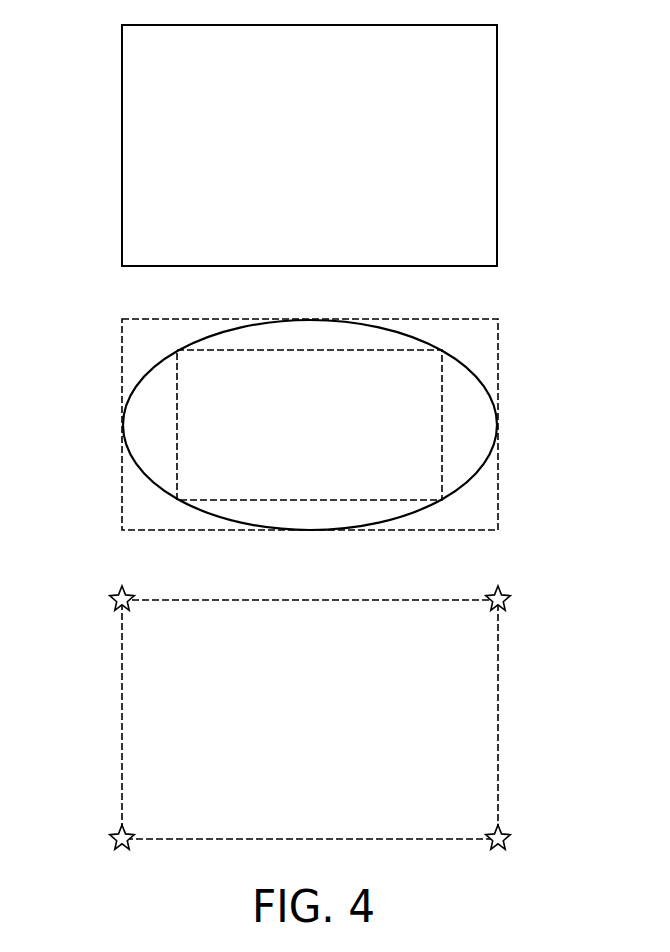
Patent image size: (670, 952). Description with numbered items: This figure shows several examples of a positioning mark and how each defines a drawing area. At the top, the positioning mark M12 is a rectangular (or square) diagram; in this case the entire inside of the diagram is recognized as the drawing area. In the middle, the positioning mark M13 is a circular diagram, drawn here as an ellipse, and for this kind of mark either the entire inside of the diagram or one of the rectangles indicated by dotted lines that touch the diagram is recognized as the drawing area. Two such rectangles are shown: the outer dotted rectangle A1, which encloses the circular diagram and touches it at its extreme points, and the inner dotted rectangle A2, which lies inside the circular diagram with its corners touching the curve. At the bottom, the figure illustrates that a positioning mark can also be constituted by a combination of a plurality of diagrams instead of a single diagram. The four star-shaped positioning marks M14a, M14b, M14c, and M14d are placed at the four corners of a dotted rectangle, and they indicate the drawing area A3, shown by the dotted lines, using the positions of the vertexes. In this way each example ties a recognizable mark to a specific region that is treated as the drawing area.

The positioning mark M12 is at (498, 113).
The rectangle indicated by dotted lines A1 is at (498, 340).
The positioning mark M13 is at (478, 367).
The rectangle indicated by dotted lines A2 is at (442, 456).
The drawing area A3 is at (498, 722).
The positioning mark M14a is at (110, 590).
The positioning mark M14b is at (550, 572).
The positioning mark M14c is at (110, 832).
The positioning mark M14d is at (510, 832).